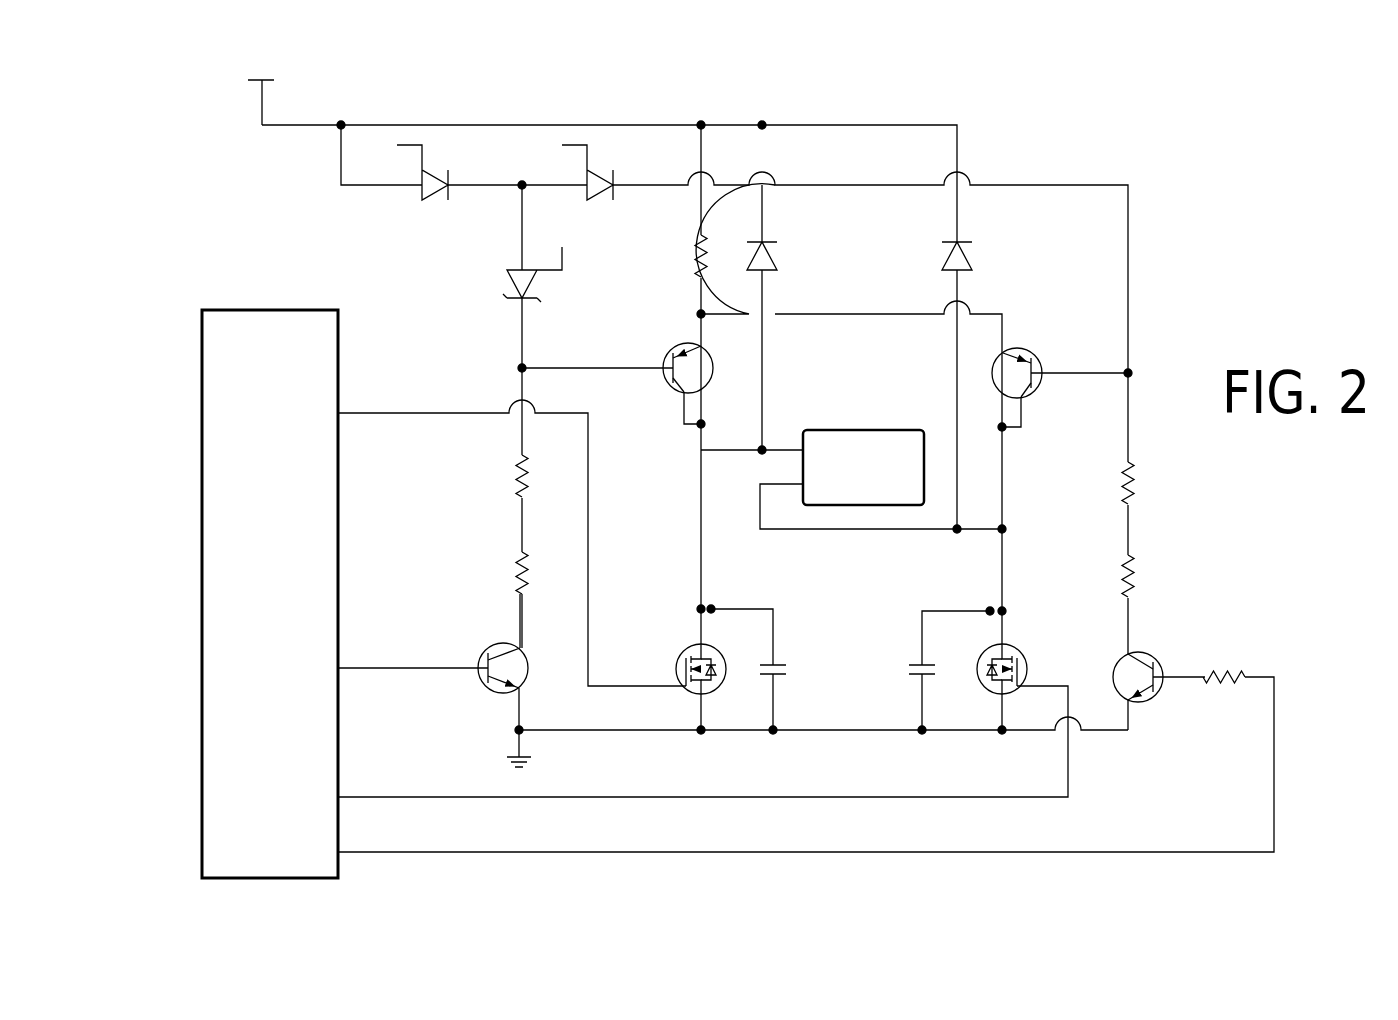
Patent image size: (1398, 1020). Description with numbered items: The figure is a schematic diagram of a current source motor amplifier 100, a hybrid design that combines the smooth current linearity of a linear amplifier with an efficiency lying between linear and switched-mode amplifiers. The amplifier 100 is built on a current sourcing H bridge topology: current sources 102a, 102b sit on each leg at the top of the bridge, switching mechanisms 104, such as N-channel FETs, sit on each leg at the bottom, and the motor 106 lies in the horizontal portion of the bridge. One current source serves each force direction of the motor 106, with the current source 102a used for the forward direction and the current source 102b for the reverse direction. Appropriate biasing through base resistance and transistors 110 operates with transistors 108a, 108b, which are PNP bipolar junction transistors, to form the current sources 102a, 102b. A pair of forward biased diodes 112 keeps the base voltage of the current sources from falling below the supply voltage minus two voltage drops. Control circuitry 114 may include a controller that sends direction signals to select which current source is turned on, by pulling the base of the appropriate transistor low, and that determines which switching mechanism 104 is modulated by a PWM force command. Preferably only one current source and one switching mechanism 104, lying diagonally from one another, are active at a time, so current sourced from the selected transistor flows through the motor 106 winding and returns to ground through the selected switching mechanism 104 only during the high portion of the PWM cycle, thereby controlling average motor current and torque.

The current source motor amplifier 100 is at (1122, 92).
The current source 102a is at (640, 352).
The current source 102b is at (1062, 355).
The switching mechanism 104 is at (718, 593).
The motor 106 is at (863, 430).
The transistor 108a is at (665, 381).
The transistor 108b is at (1040, 385).
The transistor 110 is at (480, 682).
The forward biased diode 112 is at (398, 145).
The control circuitry 114 is at (202, 593).